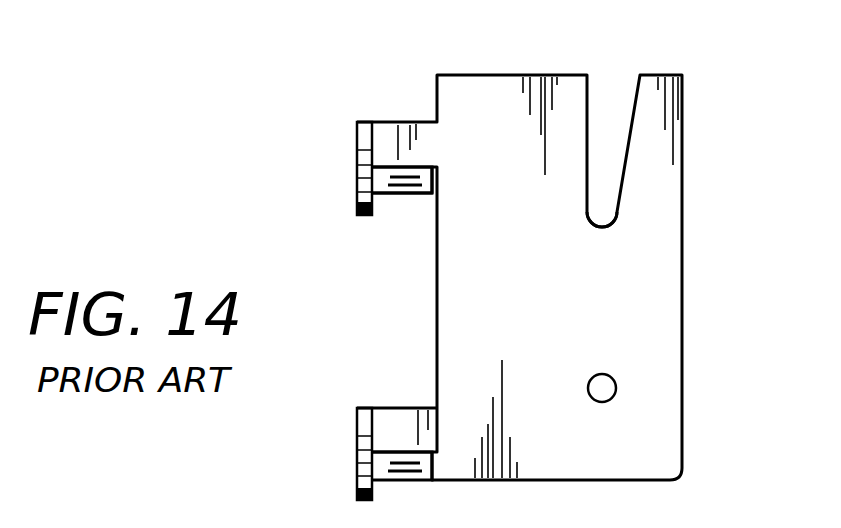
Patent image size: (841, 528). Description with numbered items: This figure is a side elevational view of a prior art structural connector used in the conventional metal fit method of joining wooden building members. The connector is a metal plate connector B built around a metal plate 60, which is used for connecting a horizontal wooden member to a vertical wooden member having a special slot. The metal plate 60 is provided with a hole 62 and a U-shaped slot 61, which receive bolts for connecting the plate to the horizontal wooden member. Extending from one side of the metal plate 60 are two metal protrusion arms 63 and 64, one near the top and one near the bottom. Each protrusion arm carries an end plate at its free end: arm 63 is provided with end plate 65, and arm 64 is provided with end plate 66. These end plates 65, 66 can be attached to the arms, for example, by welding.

The metal plate 60 is at (660, 263).
The U-shaped slot 61 is at (610, 152).
The hole 62 is at (616, 389).
The metal protrusion arm 63 is at (389, 133).
The metal protrusion arm 64 is at (393, 415).
The end plate 65 is at (357, 186).
The end plate 66 is at (357, 436).
The metal plate connector B is at (685, 318).